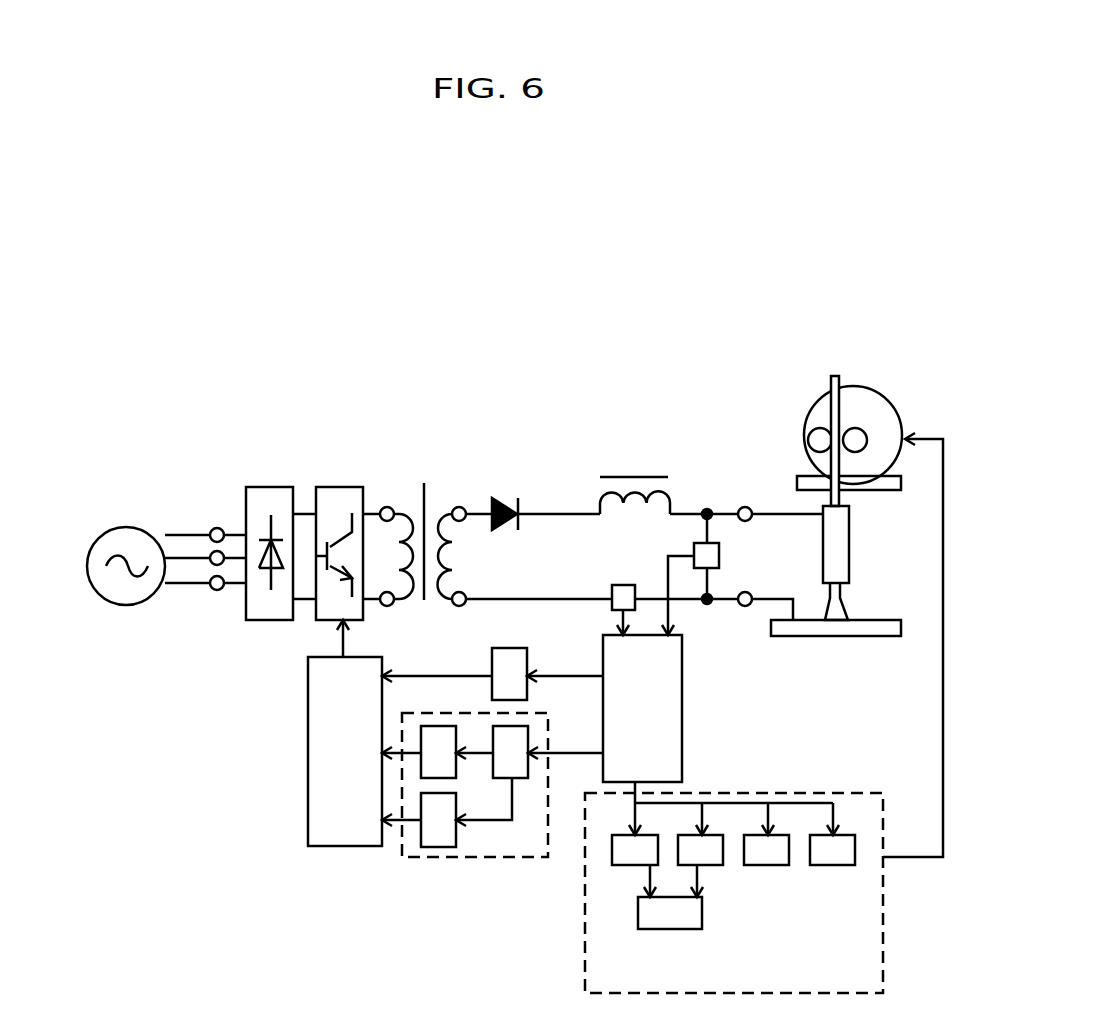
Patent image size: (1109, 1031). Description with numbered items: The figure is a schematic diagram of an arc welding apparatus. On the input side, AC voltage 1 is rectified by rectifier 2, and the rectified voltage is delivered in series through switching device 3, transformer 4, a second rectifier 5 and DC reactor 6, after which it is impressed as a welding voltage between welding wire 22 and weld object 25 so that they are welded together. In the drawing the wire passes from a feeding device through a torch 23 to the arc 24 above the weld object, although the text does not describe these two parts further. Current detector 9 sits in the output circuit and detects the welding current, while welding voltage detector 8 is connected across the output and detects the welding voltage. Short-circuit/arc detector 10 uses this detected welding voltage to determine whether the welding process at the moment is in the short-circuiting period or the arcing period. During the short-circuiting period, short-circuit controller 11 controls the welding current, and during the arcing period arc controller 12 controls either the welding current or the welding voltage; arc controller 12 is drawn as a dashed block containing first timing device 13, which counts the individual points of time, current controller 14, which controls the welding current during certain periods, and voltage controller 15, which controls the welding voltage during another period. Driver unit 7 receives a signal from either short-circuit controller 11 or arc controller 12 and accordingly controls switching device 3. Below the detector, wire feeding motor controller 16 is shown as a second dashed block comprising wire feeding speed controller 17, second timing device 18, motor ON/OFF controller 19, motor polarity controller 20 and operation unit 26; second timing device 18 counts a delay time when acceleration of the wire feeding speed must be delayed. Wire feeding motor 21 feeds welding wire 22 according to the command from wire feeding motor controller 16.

The AC voltage 1 is at (133, 527).
The rectifier 2 is at (271, 487).
The switching device 3 is at (344, 487).
The transformer 4 is at (425, 502).
The rectifier 5 is at (508, 492).
The DC reactor 6 is at (637, 470).
The driver unit 7 is at (307, 745).
The welding voltage detector 8 is at (720, 554).
The current detector 9 is at (622, 585).
The short-circuit/arc detector 10 is at (682, 710).
The short-circuit controller 11 is at (515, 648).
The arc controller 12 is at (548, 727).
The first timing device 13 is at (523, 778).
The current controller 14 is at (457, 770).
The voltage controller 15 is at (457, 832).
The wire feeding motor controller 16 is at (827, 793).
The wire feeding speed controller 17 is at (620, 867).
The second timing device 18 is at (715, 866).
The motor ON/OFF controller 19 is at (772, 866).
The motor polarity controller 20 is at (833, 866).
The wire feeding motor 21 is at (880, 407).
The welding wire 22 is at (831, 382).
The welding torch 23 is at (849, 545).
The welding arc 24 is at (848, 608).
The weld object 25 is at (887, 637).
The operation unit 26 is at (667, 930).